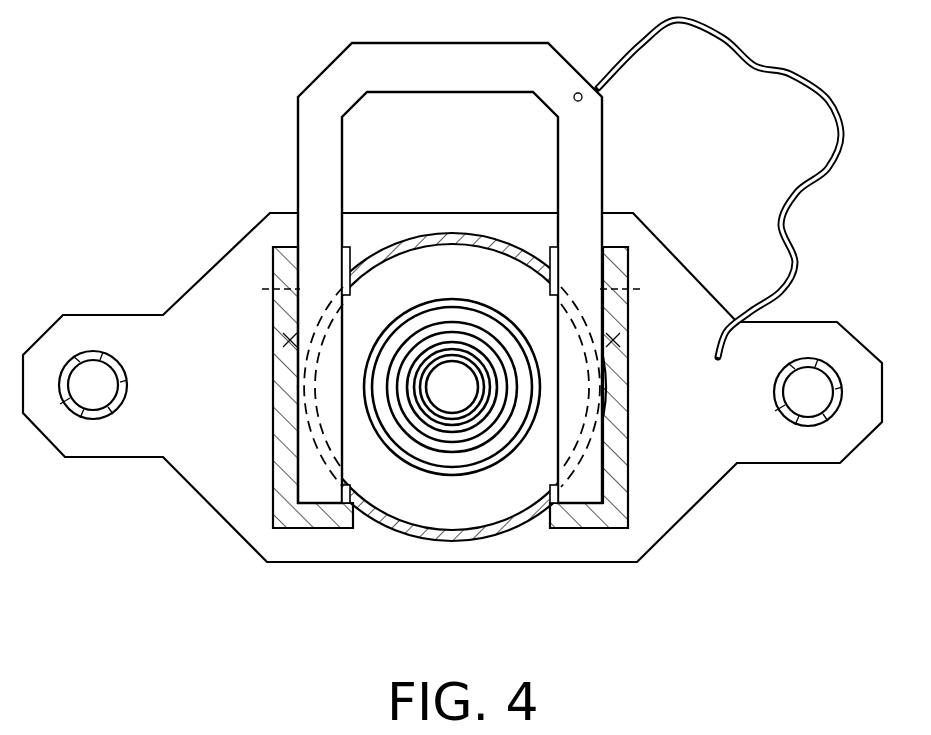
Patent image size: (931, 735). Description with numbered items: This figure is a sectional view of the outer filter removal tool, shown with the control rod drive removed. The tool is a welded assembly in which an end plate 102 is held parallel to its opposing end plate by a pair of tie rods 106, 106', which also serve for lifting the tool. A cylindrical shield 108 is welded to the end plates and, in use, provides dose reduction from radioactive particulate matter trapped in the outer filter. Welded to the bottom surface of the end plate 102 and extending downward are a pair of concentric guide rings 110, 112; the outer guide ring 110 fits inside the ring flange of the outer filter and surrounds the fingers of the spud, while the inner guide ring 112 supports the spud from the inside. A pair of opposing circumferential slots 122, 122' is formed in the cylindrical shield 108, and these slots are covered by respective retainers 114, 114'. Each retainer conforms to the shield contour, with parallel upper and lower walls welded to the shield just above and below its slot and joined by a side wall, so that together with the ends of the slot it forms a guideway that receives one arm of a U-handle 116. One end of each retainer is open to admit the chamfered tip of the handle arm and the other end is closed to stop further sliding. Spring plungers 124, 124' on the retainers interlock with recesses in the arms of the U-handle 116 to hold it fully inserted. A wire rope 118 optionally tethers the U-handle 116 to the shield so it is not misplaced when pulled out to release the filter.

The end plate 102 is at (340, 565).
The tie rod 106 is at (102, 429).
The tie rod 106' is at (822, 439).
The cylindrical shield 108 is at (427, 235).
The guide ring 110 is at (413, 307).
The guide ring 112 is at (427, 433).
The retainer 114 is at (264, 387).
The retainer 114' is at (640, 387).
The U-handle 116 is at (297, 182).
The wire rope 118 is at (793, 85).
The circumferential slot 122 is at (237, 334).
The circumferential slot 122' is at (653, 332).
The spring plunger 124 is at (218, 256).
The spring plunger 124' is at (682, 255).